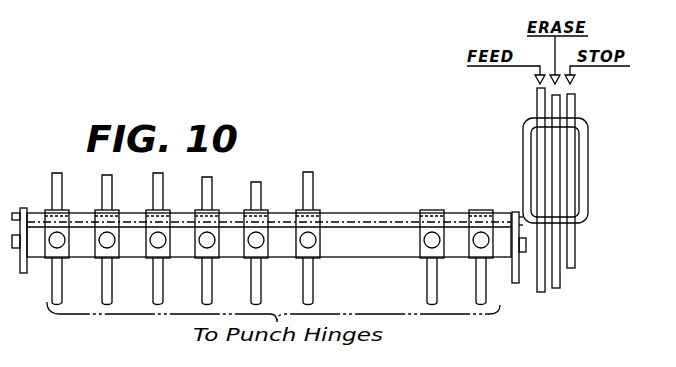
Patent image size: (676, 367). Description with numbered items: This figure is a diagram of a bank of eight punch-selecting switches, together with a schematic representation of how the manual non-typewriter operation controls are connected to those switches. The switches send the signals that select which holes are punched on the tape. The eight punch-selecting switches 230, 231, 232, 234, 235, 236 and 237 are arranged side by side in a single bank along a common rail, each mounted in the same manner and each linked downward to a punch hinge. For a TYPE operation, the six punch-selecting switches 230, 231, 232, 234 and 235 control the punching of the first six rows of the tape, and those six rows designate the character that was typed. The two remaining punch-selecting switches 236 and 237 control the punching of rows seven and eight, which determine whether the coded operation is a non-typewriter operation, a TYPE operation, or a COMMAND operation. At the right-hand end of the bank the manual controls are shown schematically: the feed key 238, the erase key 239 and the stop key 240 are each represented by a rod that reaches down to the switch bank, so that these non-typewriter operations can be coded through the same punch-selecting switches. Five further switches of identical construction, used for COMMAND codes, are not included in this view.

The punch-selecting switch 230 is at (59, 222).
The punch-selecting switch 231 is at (108, 222).
The punch-selecting switch 232 is at (158, 222).
The punch-selecting switch 234 is at (256, 222).
The punch-selecting switch 235 is at (308, 222).
The punch-selecting switch 236 is at (425, 224).
The punch-selecting switch 237 is at (478, 223).
The feed key 238 is at (538, 99).
The erase key 239 is at (556, 105).
The stop key 240 is at (572, 106).